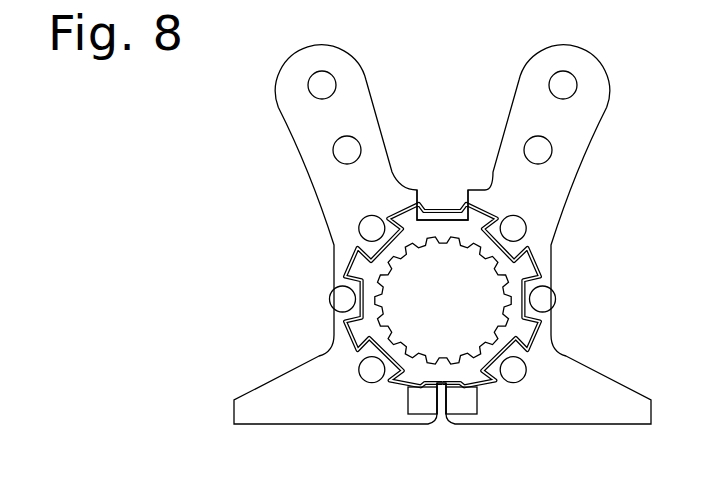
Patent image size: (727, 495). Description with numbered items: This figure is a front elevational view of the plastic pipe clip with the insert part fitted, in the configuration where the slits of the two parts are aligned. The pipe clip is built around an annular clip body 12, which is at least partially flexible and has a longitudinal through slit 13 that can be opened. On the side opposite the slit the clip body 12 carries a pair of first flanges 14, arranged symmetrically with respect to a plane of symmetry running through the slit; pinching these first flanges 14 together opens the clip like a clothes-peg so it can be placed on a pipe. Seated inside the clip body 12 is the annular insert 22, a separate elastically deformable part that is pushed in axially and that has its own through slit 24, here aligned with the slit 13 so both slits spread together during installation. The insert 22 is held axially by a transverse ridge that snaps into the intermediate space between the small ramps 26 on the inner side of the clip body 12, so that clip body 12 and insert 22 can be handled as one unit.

The annular clip body 12 is at (540, 263).
The longitudinal through slit 13 is at (446, 409).
The first flanges 14 is at (309, 121).
The annular insert 22 is at (437, 237).
The through slit 24 is at (441, 368).
The ramp 26 is at (450, 210).